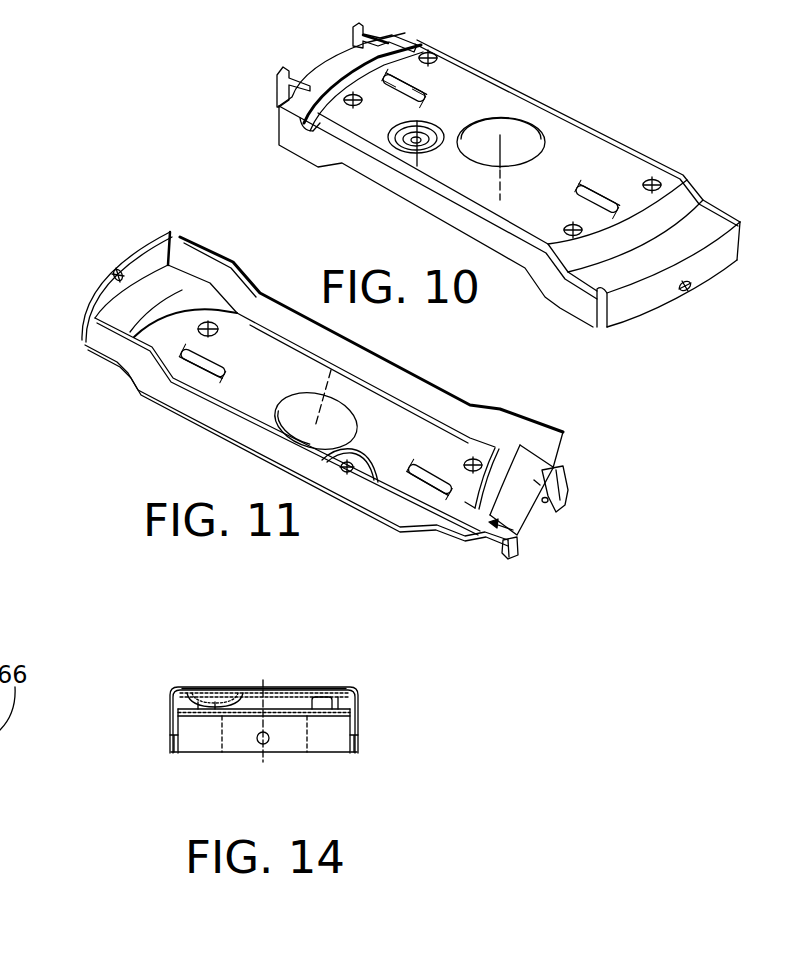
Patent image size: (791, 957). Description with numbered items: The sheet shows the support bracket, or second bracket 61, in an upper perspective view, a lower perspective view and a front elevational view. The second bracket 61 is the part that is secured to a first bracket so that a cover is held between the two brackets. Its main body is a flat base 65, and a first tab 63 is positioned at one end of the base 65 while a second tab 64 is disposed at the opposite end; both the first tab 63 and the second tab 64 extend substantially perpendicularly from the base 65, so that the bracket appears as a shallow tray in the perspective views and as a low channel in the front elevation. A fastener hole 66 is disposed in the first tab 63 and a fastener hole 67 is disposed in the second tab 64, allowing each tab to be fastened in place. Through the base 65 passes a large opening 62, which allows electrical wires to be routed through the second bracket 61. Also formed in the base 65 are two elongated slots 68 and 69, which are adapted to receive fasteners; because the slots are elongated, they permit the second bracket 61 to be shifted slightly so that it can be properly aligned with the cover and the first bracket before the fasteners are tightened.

In FIG. 10, the second bracket 61 is at (630, 338).
In FIG. 11, the second bracket 61 is at (421, 553).
In FIG. 14, the second bracket 61 is at (375, 721).
In FIG. 10, the opening 62 is at (482, 121).
In FIG. 11, the opening 62 is at (347, 432).
In FIG. 10, the first tab 63 is at (703, 291).
In FIG. 11, the first tab 63 is at (138, 243).
In FIG. 14, the first tab 63 is at (201, 753).
In FIG. 11, the second tab 64 is at (527, 528).
In FIG. 10, the base 65 is at (550, 93).
In FIG. 14, the base 65 is at (256, 687).
In FIG. 10, the fastener hole 66 is at (682, 290).
In FIG. 11, the fastener hole 66 is at (118, 268).
In FIG. 14, the fastener hole 66 is at (270, 738).
In FIG. 11, the fastener hole 67 is at (540, 497).
In FIG. 10, the elongated slot 68 is at (604, 190).
In FIG. 11, the elongated slot 68 is at (218, 353).
In FIG. 10, the elongated slot 69 is at (424, 76).
In FIG. 11, the elongated slot 69 is at (428, 474).